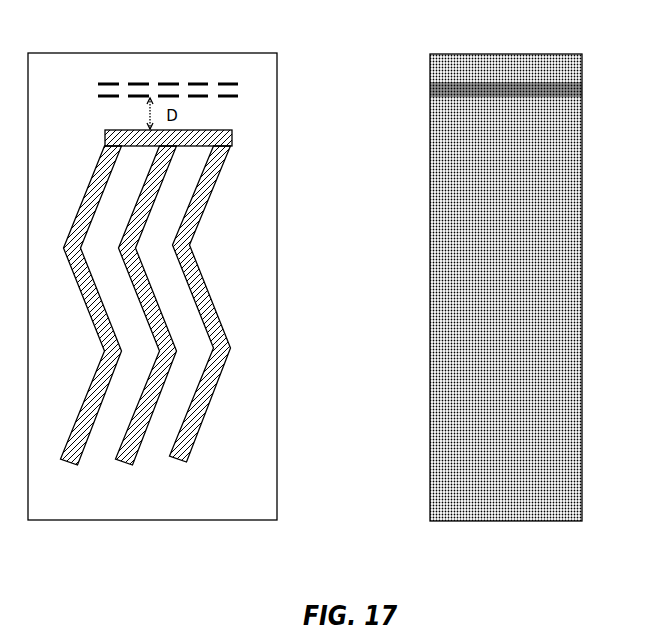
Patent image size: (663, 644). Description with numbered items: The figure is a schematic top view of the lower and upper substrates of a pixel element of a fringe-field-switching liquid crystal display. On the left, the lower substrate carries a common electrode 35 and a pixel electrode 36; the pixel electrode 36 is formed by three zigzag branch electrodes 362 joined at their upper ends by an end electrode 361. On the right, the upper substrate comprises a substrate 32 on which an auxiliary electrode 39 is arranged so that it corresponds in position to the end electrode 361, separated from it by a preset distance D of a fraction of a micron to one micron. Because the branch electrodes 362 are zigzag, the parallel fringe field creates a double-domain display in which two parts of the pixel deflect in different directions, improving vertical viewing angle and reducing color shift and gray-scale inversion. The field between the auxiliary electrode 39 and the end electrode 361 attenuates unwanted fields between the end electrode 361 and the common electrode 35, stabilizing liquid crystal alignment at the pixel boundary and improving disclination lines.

The common electrode 35 is at (192, 66).
The auxiliary electrode 39 is at (115, 83).
The pixel electrode 36 is at (195, 285).
The end electrode 361 is at (220, 130).
The branch electrode 362 is at (193, 233).
The substrate 32 is at (462, 54).